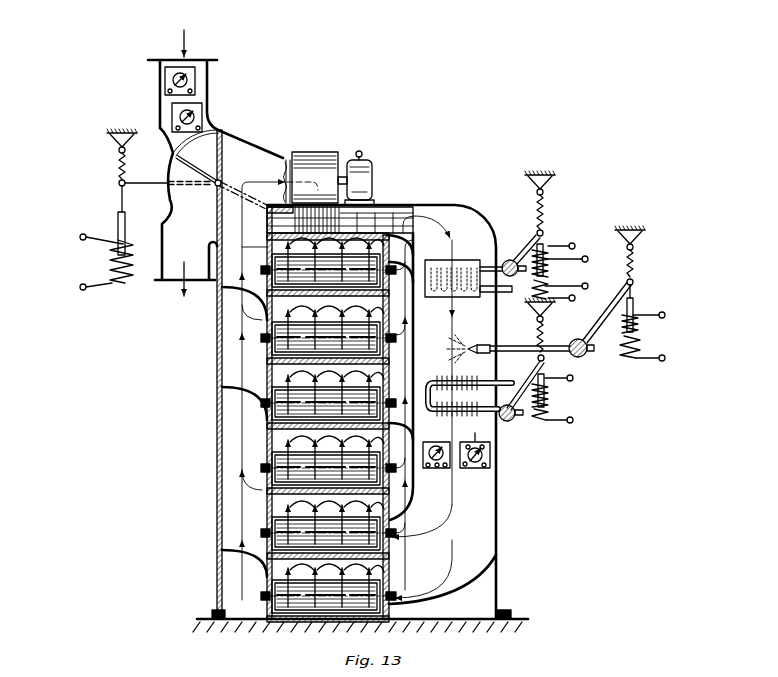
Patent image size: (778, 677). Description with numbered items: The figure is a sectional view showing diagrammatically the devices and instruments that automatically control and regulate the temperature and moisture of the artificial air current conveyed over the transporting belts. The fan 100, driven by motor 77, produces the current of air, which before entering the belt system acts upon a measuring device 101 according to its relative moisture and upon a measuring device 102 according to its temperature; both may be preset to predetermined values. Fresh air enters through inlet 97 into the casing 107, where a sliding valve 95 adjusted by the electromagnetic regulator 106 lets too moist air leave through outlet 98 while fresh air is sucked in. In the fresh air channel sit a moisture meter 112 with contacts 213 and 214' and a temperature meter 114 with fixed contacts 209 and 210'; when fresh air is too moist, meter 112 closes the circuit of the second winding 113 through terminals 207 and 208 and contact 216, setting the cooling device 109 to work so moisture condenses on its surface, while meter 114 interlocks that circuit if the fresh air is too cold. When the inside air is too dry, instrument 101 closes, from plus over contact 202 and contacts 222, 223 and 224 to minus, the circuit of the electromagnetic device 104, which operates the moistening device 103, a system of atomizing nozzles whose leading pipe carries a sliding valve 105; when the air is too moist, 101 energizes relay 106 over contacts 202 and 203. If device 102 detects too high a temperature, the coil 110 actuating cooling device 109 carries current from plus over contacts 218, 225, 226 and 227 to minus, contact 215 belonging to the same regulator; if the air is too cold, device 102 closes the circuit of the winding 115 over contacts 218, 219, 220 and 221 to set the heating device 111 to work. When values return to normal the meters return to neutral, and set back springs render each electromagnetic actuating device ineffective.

The inlet hood 97 is at (198, 67).
The temperature meter 114 is at (190, 86).
The thermostat contact 210' is at (214, 87).
The fixed contact 209 is at (168, 91).
The moisture meter 112 is at (194, 123).
The hygrostat contact 214' is at (217, 120).
The contact 213 is at (175, 129).
The sliding valve 95 is at (223, 148).
The casing 107 is at (171, 167).
The electromagnetic regulator 106 is at (124, 209).
The exhaust duct 98 is at (177, 276).
The fan 100 is at (313, 158).
The motor 77 is at (363, 157).
The cooling device 109 is at (458, 263).
The coil 110 is at (561, 238).
The second winding 113 is at (547, 275).
The contact 226 is at (573, 245).
The terminal 215 is at (577, 258).
The contact 216 is at (577, 285).
The contact 227 is at (573, 298).
The moistening device 103 is at (508, 346).
The sliding valve 105 is at (583, 358).
The electromagnetic device 104 is at (651, 295).
The contact 223 is at (660, 308).
The contact 224 is at (640, 330).
The heating device 111 is at (475, 398).
The winding 115 is at (551, 397).
The contact 220 is at (566, 385).
The contact 221 is at (570, 425).
The measuring device 102 is at (436, 461).
The contact 225 is at (427, 473).
The contact 219 is at (445, 474).
The contact 218 is at (436, 478).
The measuring device 101 is at (491, 451).
The contact 202 is at (473, 429).
The contact 222 is at (465, 438).
The contact 203 is at (485, 438).
The terminal 207 is at (467, 473).
The terminal 208 is at (506, 449).